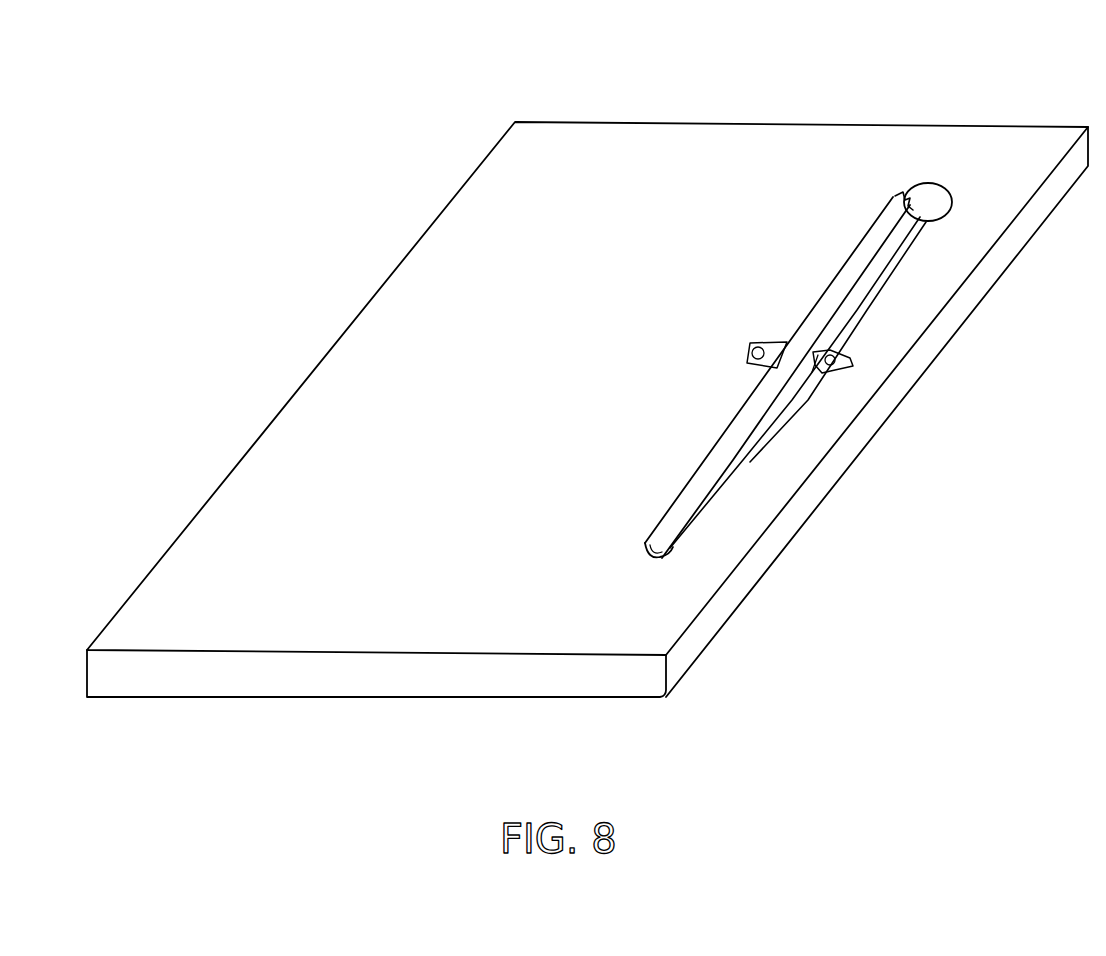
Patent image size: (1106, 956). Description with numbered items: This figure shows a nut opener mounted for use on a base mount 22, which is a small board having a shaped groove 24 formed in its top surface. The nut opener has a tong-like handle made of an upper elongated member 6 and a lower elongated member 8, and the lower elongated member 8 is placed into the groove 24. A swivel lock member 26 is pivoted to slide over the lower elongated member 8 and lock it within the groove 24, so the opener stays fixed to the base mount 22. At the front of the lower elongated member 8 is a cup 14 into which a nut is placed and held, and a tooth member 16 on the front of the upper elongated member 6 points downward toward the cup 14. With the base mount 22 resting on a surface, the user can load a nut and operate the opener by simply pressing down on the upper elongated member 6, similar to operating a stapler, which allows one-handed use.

The base mount 22 is at (965, 127).
The upper elongated member 6 is at (870, 250).
The lower elongated member 8 is at (887, 257).
The cup 14 is at (950, 183).
The tooth member 16 is at (903, 195).
The shaped groove 24 is at (655, 560).
The swivel lock member 26 is at (812, 365).